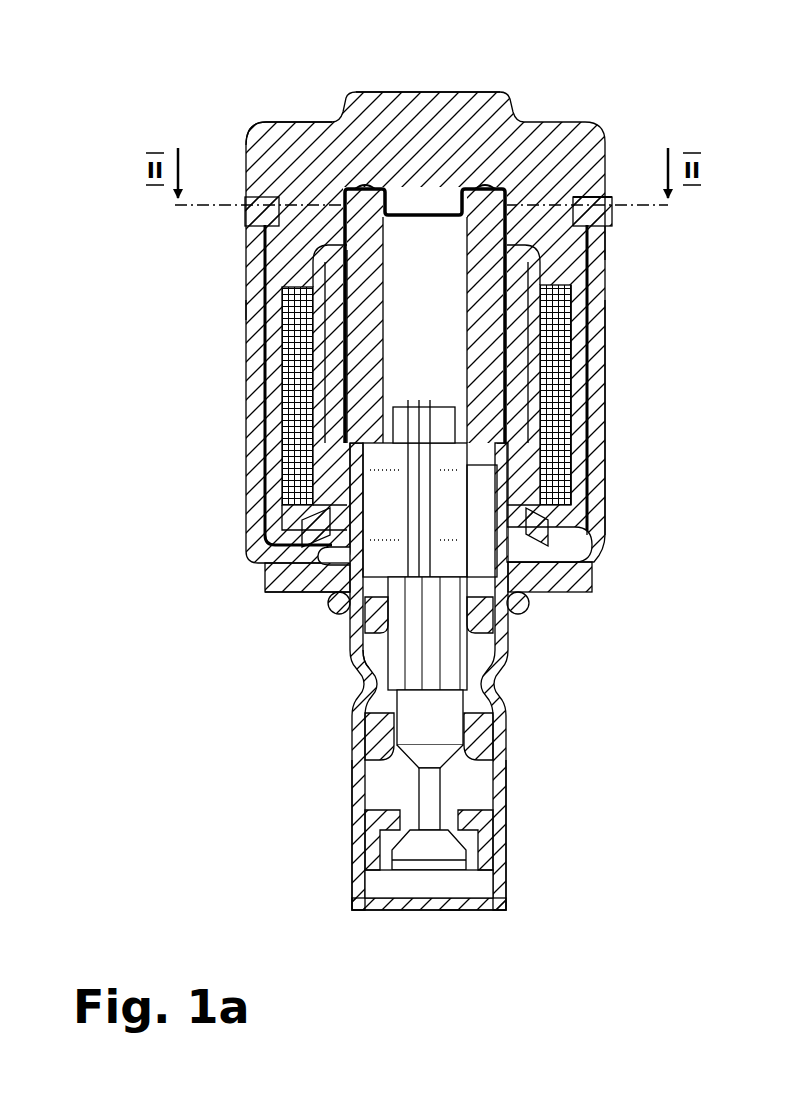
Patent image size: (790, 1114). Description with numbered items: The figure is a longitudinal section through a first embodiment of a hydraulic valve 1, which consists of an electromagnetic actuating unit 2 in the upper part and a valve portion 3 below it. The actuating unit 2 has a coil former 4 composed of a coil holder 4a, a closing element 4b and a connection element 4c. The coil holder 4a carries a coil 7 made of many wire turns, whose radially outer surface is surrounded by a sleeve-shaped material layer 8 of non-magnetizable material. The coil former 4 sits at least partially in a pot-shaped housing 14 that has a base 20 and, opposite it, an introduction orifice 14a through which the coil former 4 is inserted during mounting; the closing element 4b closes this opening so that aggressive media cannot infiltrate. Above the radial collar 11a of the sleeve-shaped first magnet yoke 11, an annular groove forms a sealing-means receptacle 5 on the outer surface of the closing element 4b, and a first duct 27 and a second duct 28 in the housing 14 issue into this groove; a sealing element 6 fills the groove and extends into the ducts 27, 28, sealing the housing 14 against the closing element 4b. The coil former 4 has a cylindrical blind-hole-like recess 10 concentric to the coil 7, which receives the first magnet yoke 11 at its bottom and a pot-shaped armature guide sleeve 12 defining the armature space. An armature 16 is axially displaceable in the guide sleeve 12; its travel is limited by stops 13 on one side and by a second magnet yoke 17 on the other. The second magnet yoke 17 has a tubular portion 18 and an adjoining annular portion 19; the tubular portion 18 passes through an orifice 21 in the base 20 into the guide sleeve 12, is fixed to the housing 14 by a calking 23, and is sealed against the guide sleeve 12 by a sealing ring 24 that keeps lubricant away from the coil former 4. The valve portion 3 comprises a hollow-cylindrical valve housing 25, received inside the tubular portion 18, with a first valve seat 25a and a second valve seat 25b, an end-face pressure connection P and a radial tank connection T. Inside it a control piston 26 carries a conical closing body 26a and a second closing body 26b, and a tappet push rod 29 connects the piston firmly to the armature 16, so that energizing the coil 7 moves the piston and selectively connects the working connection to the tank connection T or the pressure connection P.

The hydraulic valve 1 is at (262, 105).
The electromagnetic actuating unit 2 is at (608, 340).
The valve portion 3 is at (514, 876).
The coil former 4 is at (402, 90).
The coil holder 4a is at (312, 415).
The closing element 4b is at (300, 200).
The connection element 4c is at (445, 112).
The sealing-means receptacle 5 is at (600, 272).
The sealing element 6 is at (602, 197).
The coil 7 is at (606, 425).
The material layer 8 is at (575, 450).
The recess 10 is at (366, 183).
The first magnet yoke 11 is at (292, 318).
The collar 11a is at (328, 285).
The armature guide sleeve 12 is at (322, 478).
The stops 13 is at (490, 192).
The housing 14 is at (598, 380).
The introduction orifice 14a is at (585, 190).
The armature 16 is at (365, 383).
The second magnet yoke 17 is at (263, 575).
The tubular portion 18 is at (540, 525).
The annular portion 19 is at (268, 590).
The base 20 is at (585, 563).
The orifice 21 is at (531, 592).
The calking 23 is at (326, 601).
The sealing ring 24 is at (555, 532).
The valve housing 25 is at (356, 790).
The first valve seat 25a is at (382, 757).
The second valve seat 25b is at (380, 818).
The control piston 26 is at (452, 655).
The conical closing body 26a is at (440, 768).
The second closing body 26b is at (455, 832).
The first duct 27 is at (248, 238).
The second duct 28 is at (606, 245).
The tappet push rod 29 is at (390, 510).
The tank connection T is at (358, 683).
The pressure connection P is at (447, 916).